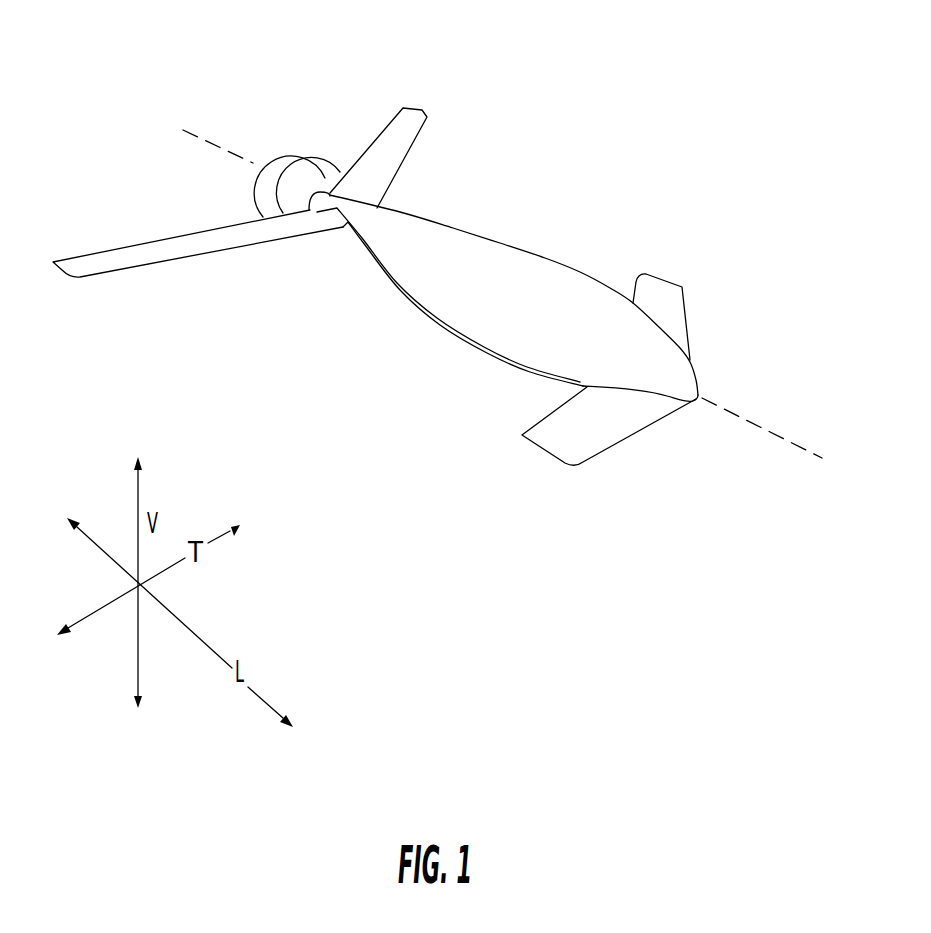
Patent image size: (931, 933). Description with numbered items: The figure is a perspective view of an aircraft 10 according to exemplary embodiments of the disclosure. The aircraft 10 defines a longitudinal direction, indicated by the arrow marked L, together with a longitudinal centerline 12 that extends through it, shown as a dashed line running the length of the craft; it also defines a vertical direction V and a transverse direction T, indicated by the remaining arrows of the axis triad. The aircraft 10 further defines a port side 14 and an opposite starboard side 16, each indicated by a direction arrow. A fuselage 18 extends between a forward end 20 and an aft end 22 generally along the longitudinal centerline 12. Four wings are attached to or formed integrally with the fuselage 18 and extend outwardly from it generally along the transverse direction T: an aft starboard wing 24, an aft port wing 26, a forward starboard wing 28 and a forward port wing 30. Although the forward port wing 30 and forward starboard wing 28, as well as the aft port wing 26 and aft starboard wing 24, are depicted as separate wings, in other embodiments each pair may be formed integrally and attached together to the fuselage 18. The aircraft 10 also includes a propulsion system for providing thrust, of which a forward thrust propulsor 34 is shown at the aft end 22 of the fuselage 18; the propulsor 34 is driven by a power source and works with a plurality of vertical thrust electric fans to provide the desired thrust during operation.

The aircraft 10 is at (637, 60).
The longitudinal centerline 12 is at (737, 412).
The port side 14 is at (512, 251).
The starboard side 16 is at (447, 377).
The fuselage 18 is at (517, 270).
The forward end 20 is at (695, 413).
The aft end 22 is at (366, 127).
The aft starboard wing 24 is at (175, 261).
The aft port wing 26 is at (412, 127).
The forward starboard wing 28 is at (568, 443).
The forward port wing 30 is at (672, 300).
The forward thrust propulsor 34 is at (303, 155).